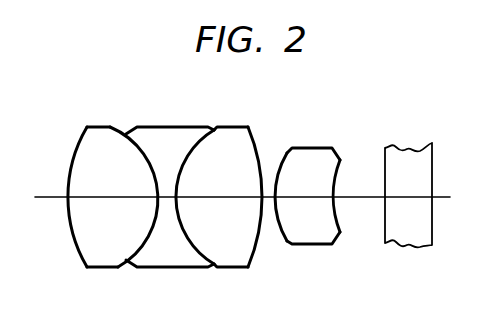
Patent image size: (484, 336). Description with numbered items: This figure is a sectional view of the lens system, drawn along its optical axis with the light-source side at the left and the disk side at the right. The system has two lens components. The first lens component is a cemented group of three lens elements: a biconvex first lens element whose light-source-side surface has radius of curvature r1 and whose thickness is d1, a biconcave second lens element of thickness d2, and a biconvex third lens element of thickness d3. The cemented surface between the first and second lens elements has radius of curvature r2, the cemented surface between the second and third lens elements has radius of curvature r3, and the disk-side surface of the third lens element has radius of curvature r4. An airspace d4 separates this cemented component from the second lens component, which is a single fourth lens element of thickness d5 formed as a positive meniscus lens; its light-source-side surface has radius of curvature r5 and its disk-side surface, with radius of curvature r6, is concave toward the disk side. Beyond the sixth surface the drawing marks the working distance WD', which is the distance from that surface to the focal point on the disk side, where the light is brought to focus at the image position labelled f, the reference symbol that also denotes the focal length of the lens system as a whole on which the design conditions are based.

The thickness of first lens element d1 is at (115, 195).
The thickness of second lens element d2 is at (170, 195).
The thickness of third lens element d3 is at (237, 195).
The airspace between first and second lens components d4 is at (272, 195).
The thickness of fourth lens element d5 is at (317, 195).
The radius of curvature of first lens surface r1 is at (80, 253).
The radius of curvature of second lens surface r2 is at (141, 248).
The radius of curvature of third lens surface r3 is at (202, 250).
The radius of curvature of fourth lens surface r4 is at (254, 256).
The radius of curvature of fifth lens surface r5 is at (287, 241).
The radius of curvature of sixth lens surface r6 is at (338, 223).
The distance to focal point on disk side WD' is at (361, 153).
The focal length of lens system f is at (412, 195).